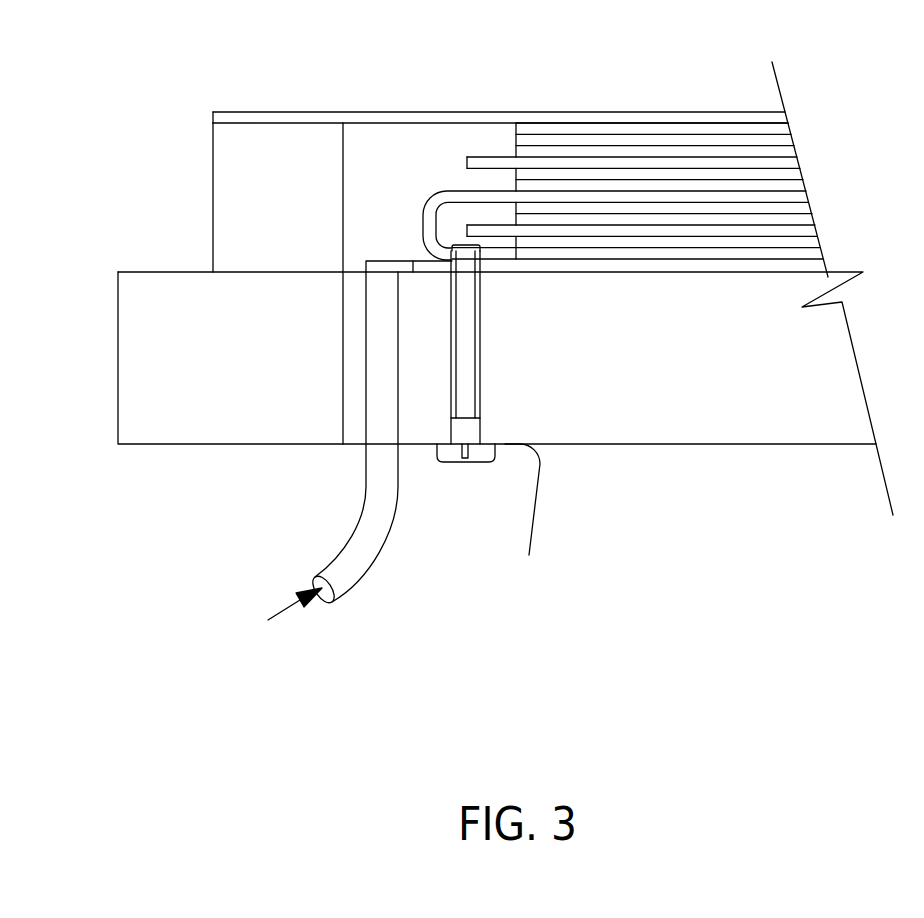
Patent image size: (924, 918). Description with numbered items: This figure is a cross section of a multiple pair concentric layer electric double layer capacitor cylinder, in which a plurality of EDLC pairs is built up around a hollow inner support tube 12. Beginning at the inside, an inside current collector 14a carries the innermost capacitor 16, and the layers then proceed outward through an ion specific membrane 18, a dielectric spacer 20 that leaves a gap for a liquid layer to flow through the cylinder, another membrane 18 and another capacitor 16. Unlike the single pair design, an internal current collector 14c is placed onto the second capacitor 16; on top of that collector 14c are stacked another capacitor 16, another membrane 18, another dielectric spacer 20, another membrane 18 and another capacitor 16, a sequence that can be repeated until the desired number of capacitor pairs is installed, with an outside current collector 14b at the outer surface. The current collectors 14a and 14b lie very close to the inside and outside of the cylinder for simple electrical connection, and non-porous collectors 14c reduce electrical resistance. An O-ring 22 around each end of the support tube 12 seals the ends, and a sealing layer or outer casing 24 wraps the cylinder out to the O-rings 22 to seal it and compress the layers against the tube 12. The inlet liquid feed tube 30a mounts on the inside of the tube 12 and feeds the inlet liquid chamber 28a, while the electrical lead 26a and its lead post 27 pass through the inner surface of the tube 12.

The inner support tube 12 is at (138, 363).
The inside current collector 14a is at (720, 263).
The outside current collector 14b is at (537, 130).
The within device current collector 14c is at (435, 200).
The capacitor 16 is at (558, 143).
The ion specific membrane 18 is at (582, 150).
The dielectric spacer 20 is at (700, 163).
The O-ring 22 is at (238, 210).
The outer casing/seal 24 is at (257, 118).
The electrical lead 26a is at (537, 525).
The electrical lead post 27 is at (463, 388).
The inlet liquid chamber 28a is at (368, 140).
The inlet liquid feed tube 30a is at (355, 558).